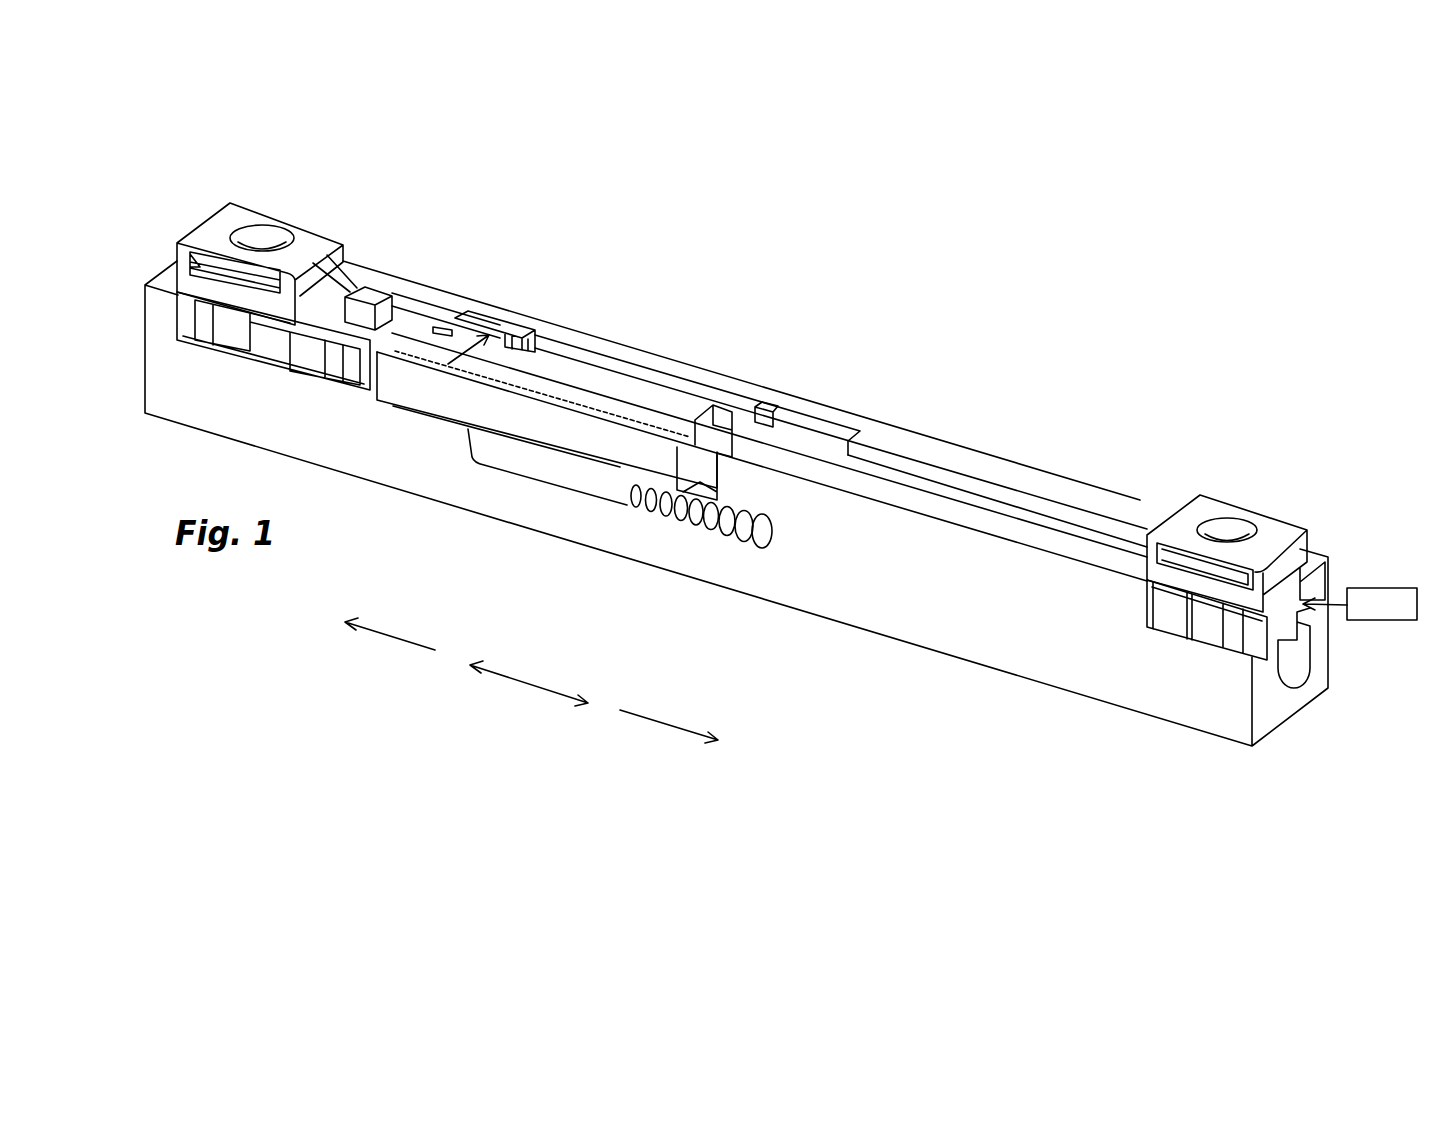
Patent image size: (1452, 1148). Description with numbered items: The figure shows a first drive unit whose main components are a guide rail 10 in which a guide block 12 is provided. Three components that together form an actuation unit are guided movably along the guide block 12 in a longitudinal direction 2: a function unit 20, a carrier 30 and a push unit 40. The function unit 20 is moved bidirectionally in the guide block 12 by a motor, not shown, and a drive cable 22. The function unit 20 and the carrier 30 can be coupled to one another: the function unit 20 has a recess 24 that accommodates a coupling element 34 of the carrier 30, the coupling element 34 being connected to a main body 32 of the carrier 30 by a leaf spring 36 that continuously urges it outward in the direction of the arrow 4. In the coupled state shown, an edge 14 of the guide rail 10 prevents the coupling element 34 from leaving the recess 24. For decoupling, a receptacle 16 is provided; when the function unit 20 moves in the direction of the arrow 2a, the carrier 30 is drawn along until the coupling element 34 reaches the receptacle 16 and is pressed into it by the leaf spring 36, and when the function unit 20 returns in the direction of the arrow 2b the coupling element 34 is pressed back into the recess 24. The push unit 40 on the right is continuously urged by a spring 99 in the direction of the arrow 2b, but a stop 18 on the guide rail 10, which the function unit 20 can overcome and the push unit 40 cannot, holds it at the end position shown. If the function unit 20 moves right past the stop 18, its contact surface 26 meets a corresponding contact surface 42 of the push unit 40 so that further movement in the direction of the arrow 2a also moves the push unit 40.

The longitudinal direction 2 is at (527, 678).
The arrow 2a is at (667, 722).
The arrow 2b is at (406, 640).
The arrow 4 is at (480, 333).
The guide rail 10 is at (1031, 412).
The guide block 12 is at (1307, 637).
The edge 14 is at (907, 463).
The receptacle 16 is at (813, 423).
The stop 18 is at (1128, 553).
The function unit 20 is at (642, 332).
The drive cable 22 is at (735, 540).
The recess 24 is at (535, 352).
The contact surface 26 is at (715, 438).
The carrier 30 is at (371, 207).
The main body 32 is at (310, 240).
The coupling element 34 is at (493, 320).
The leaf spring 36 is at (442, 322).
The push unit 40 is at (1254, 486).
The contact surface 42 is at (1147, 513).
The spring 99 is at (1390, 588).